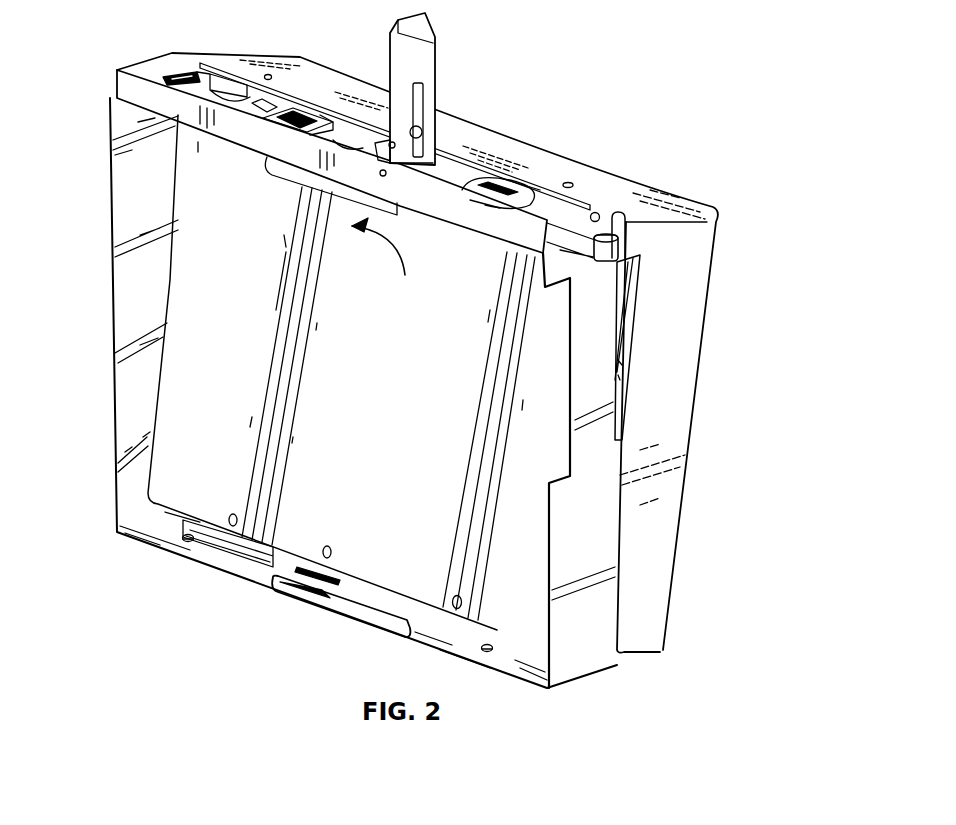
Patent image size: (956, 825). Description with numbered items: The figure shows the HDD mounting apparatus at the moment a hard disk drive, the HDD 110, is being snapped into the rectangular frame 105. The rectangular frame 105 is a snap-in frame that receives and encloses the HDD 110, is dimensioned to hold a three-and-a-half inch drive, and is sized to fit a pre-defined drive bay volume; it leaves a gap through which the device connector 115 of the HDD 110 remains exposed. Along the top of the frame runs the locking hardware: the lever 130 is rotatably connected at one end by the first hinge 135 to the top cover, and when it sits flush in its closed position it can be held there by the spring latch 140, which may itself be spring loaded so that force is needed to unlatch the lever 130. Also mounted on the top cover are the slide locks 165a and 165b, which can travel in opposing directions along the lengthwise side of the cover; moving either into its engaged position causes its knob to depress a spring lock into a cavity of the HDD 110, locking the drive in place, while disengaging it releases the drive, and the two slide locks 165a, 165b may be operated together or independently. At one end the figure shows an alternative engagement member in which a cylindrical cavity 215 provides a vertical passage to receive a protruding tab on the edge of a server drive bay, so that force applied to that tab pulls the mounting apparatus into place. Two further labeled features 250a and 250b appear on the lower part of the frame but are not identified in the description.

The rectangular frame 105 is at (597, 660).
The HDD 110 is at (663, 467).
The device connector 115 is at (637, 317).
The lever 130 is at (420, 63).
The first hinge 135 is at (463, 193).
The spring latch 140 is at (305, 110).
The slide lock 165a is at (523, 187).
The slide lock 165b is at (190, 76).
The cylindrical cavity 215 is at (615, 232).
The mounting hole 250a is at (490, 612).
The mounting hole 250b is at (194, 505).